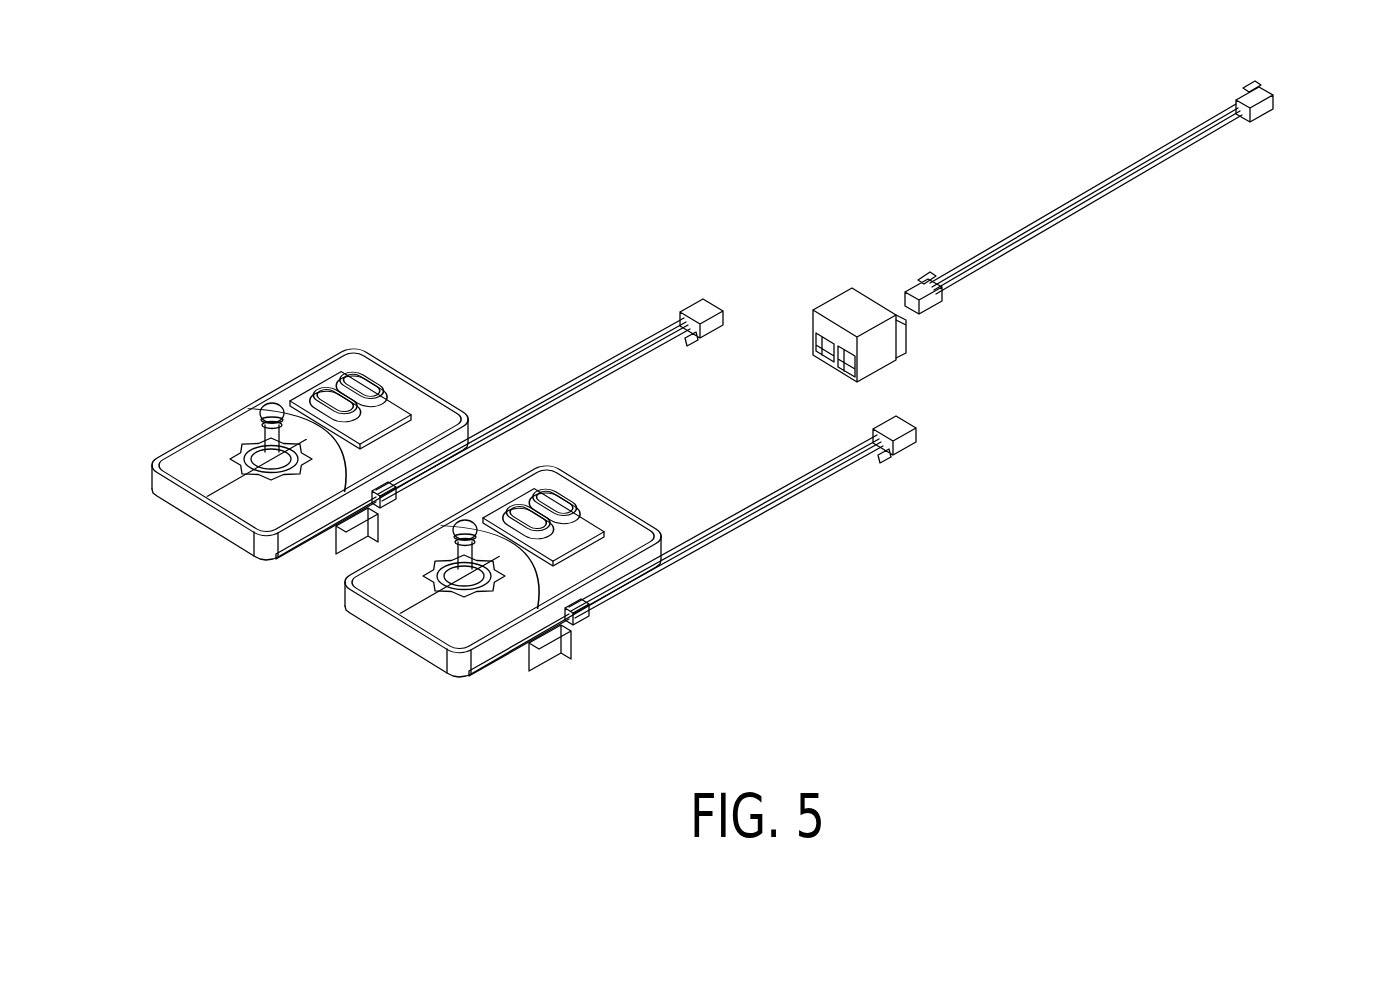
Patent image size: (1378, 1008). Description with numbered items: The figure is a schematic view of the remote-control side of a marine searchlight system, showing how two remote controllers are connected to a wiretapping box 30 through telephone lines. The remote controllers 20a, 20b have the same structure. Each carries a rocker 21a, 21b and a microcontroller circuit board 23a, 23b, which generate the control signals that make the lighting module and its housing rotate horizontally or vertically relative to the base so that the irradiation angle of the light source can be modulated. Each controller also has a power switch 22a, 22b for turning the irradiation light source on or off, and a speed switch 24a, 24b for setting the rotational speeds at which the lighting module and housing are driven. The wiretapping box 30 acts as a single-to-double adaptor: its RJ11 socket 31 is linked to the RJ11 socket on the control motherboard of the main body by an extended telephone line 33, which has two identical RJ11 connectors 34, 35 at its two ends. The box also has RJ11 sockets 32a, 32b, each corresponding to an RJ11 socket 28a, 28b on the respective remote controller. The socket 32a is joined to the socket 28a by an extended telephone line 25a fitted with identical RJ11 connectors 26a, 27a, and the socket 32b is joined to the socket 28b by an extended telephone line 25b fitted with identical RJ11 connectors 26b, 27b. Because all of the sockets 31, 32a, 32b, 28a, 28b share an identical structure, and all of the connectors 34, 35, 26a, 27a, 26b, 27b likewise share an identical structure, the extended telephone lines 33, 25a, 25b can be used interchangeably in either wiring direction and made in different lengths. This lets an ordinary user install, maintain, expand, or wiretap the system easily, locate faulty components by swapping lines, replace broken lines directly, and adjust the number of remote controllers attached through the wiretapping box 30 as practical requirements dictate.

The remote controller 20a is at (187, 452).
The remote controller 20b is at (503, 588).
The rocker 21a is at (267, 397).
The rocker 21b is at (371, 602).
The power switch 22a is at (363, 392).
The power switch 22b is at (610, 474).
The microcontroller circuit board 23a is at (280, 556).
The microcontroller circuit board 23b is at (502, 693).
The speed switch 24a is at (322, 400).
The speed switch 24b is at (618, 557).
The extended telephone line 25a is at (527, 405).
The extended telephone line 25b is at (759, 526).
The RJ11 connector 26a is at (680, 306).
The RJ11 connector 26b is at (985, 452).
The RJ11 connector 27a is at (370, 498).
The RJ11 connector 27b is at (649, 641).
The RJ11 socket 28a is at (345, 545).
The RJ11 socket 28b is at (593, 685).
The wiretapping box 30 is at (852, 310).
The RJ11 socket 31 is at (895, 300).
The RJ11 socket 32a is at (813, 337).
The RJ11 socket 32b is at (857, 367).
The extended telephone line 33 is at (1078, 195).
The RJ11 connector 34 is at (1262, 115).
The RJ11 connector 35 is at (927, 302).